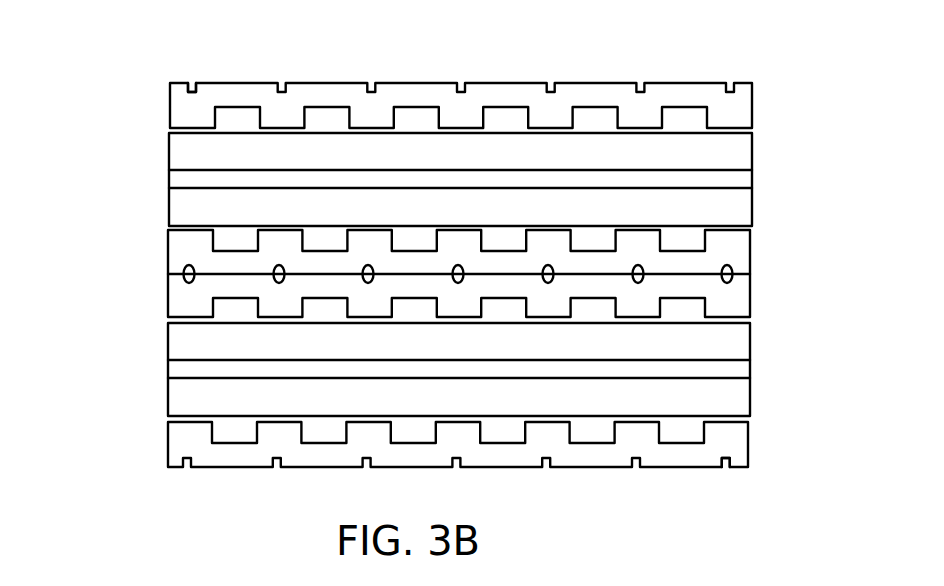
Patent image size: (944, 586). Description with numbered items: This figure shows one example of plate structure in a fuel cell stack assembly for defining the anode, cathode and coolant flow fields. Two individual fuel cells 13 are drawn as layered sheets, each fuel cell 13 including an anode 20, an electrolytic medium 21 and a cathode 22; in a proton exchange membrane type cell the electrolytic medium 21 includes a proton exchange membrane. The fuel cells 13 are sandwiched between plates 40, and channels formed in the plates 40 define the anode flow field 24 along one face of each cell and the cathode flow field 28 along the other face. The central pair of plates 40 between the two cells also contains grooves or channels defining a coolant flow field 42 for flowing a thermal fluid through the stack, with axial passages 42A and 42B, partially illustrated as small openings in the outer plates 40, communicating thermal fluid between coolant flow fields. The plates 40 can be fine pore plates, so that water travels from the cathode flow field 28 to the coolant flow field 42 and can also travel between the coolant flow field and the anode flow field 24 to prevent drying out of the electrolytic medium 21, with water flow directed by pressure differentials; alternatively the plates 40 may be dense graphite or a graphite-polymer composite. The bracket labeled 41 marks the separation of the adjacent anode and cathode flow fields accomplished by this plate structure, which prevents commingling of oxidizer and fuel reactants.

The fuel cell 13 is at (780, 133).
The anode 20 is at (198, 153).
The electrolytic medium 21 is at (186, 181).
The cathode 22 is at (190, 205).
The anode flow field 24 is at (235, 118).
The cathode flow field 28 is at (237, 237).
The plate 40 is at (742, 108).
The anode-cathode flow field separation 41 is at (780, 230).
The coolant flow field 42 is at (185, 278).
The axial passage 42A is at (727, 467).
The axial passage 42B is at (191, 87).